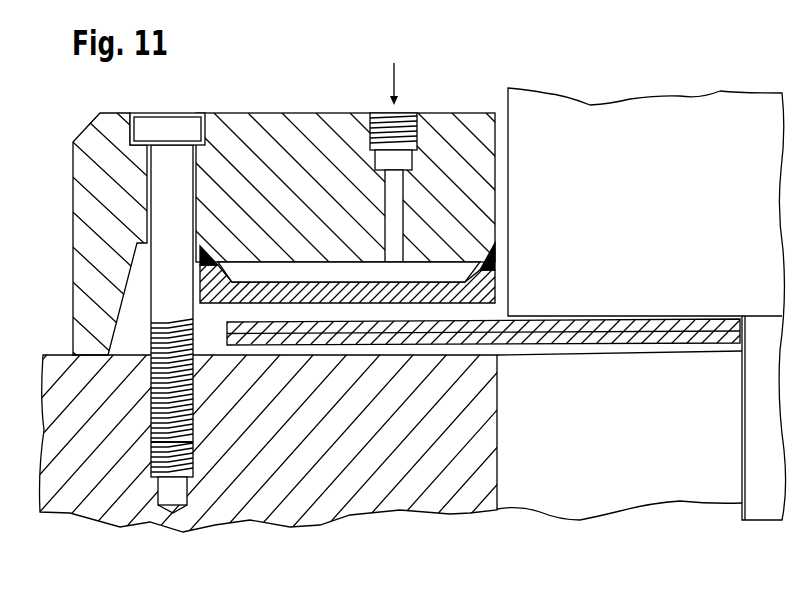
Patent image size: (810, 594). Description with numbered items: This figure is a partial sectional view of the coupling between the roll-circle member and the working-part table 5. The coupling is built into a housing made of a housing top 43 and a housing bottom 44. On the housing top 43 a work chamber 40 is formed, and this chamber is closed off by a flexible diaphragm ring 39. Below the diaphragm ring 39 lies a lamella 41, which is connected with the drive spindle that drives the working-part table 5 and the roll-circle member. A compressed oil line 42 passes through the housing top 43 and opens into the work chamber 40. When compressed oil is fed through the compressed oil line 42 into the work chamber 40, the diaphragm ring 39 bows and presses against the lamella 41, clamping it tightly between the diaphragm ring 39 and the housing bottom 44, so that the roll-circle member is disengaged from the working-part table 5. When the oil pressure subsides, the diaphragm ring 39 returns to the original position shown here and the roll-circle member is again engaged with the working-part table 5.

The working-part table 5 is at (651, 89).
The flexible diaphragm ring 39 is at (488, 284).
The work chamber 40 is at (437, 278).
The lamella 41 is at (639, 331).
The compressed oil line 42 is at (402, 124).
The housing top 43 is at (85, 246).
The housing bottom 44 is at (60, 500).